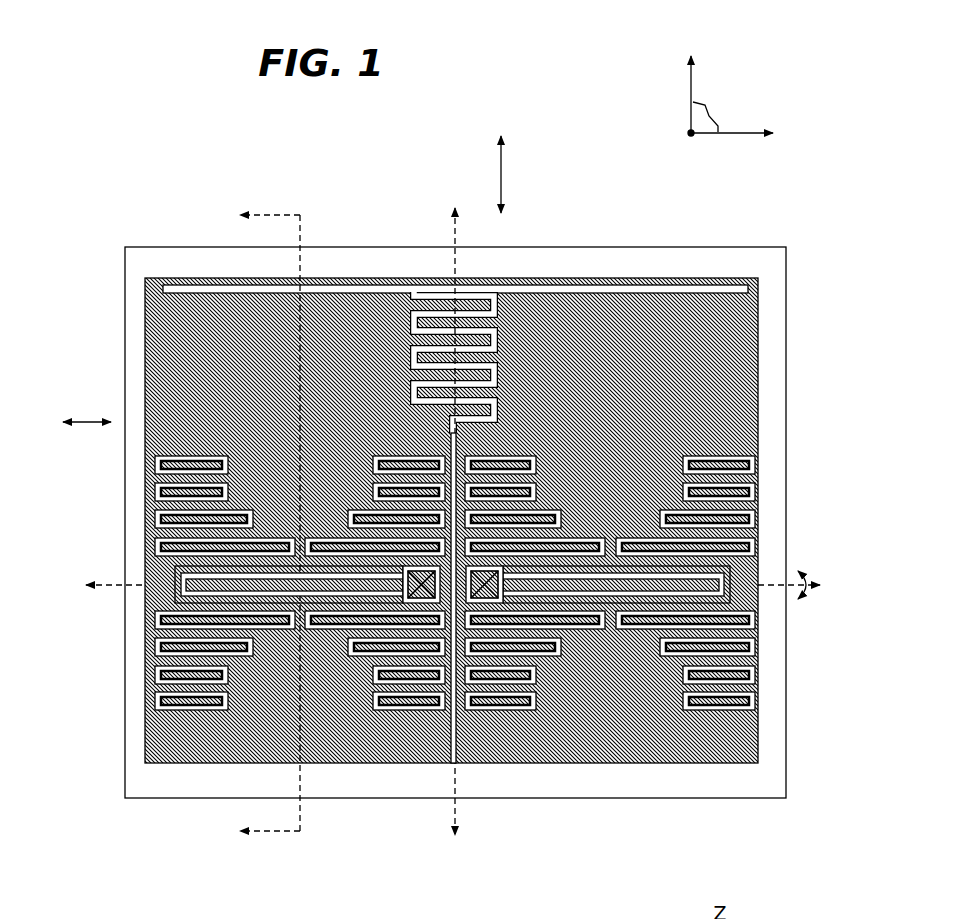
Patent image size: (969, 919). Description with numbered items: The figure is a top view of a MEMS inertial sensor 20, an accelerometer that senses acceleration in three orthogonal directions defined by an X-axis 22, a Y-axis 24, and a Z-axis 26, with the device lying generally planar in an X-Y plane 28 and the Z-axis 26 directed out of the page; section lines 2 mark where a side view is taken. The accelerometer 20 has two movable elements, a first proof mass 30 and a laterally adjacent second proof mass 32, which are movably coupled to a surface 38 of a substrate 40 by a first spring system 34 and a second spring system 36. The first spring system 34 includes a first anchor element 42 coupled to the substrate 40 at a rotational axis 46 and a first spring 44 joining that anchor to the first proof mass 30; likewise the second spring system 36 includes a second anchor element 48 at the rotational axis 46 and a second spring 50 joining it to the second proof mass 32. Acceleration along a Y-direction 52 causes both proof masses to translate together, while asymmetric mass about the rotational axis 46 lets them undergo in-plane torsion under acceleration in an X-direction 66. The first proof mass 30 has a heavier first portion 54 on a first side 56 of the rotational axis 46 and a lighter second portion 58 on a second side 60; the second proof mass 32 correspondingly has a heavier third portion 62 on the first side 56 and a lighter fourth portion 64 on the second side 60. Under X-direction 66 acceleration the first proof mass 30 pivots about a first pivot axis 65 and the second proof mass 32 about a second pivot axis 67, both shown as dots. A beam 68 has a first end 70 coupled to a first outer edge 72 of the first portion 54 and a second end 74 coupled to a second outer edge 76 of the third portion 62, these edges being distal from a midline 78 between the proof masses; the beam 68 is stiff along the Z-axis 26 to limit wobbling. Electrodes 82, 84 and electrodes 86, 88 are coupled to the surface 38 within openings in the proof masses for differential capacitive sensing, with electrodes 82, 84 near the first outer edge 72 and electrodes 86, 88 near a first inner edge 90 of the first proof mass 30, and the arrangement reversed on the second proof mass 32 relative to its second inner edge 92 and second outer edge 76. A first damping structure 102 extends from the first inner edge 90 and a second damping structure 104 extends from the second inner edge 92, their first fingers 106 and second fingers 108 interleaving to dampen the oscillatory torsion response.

The section lines 2 is at (260, 527).
The MEMS inertial sensor 20 is at (676, 866).
The X-axis 22 is at (728, 125).
The Y-axis 24 is at (683, 60).
The Z-axis 26 is at (683, 130).
The X-Y plane 28 is at (704, 104).
The first proof mass 30 is at (220, 330).
The second proof mass 32 is at (662, 300).
The first spring system 34 is at (168, 558).
The second spring system 36 is at (726, 558).
The surface 38 is at (210, 786).
The substrate 40 is at (128, 242).
The first anchor element 42 is at (441, 758).
The first spring 44 is at (178, 585).
The rotational axis 46 is at (459, 570).
The second anchor element 48 is at (451, 758).
The second spring 50 is at (710, 587).
The Y-direction 52 is at (497, 150).
The first portion 54 is at (238, 376).
The first side 56 is at (192, 300).
The second portion 58 is at (256, 701).
The second side 60 is at (192, 772).
The third portion 62 is at (628, 426).
The fourth portion 64 is at (566, 706).
The first pivot axis 65 is at (310, 603).
The X-direction 66 is at (82, 416).
The second pivot axis 67 is at (613, 580).
The beam 68 is at (360, 270).
The first end 70 is at (165, 270).
The first outer edge 72 is at (150, 288).
The second end 74 is at (757, 240).
The second outer edge 76 is at (752, 286).
The midline 78 is at (434, 507).
The electrodes 82 is at (230, 510).
The electrodes 84 is at (185, 480).
The electrodes 86 is at (410, 480).
The electrodes 88 is at (322, 540).
The first inner edge 90 is at (438, 434).
The second inner edge 92 is at (455, 440).
The first damping structure 102 is at (411, 281).
The second damping structure 104 is at (491, 281).
The first fingers 106 is at (467, 313).
The second fingers 108 is at (483, 330).